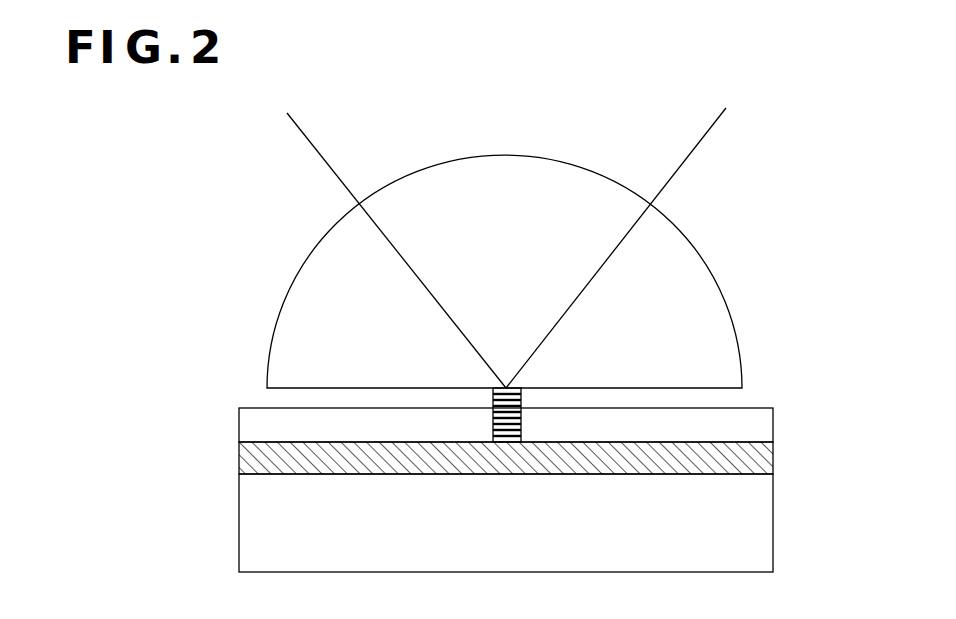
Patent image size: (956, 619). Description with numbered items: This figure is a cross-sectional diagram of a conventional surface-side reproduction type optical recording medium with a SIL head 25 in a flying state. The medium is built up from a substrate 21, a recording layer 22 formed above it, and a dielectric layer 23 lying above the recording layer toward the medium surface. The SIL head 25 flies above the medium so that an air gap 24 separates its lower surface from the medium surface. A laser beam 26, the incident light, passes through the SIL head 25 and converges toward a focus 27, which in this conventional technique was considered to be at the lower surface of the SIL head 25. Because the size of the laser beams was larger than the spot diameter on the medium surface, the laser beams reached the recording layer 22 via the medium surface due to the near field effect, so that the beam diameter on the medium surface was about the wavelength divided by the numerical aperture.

The substrate 21 is at (775, 518).
The recording layer 22 is at (775, 461).
The dielectric layer 23 is at (775, 418).
The air gap 24 is at (712, 398).
The SIL head 25 is at (712, 268).
The laser beam 26 is at (690, 136).
The focus 27 is at (506, 388).